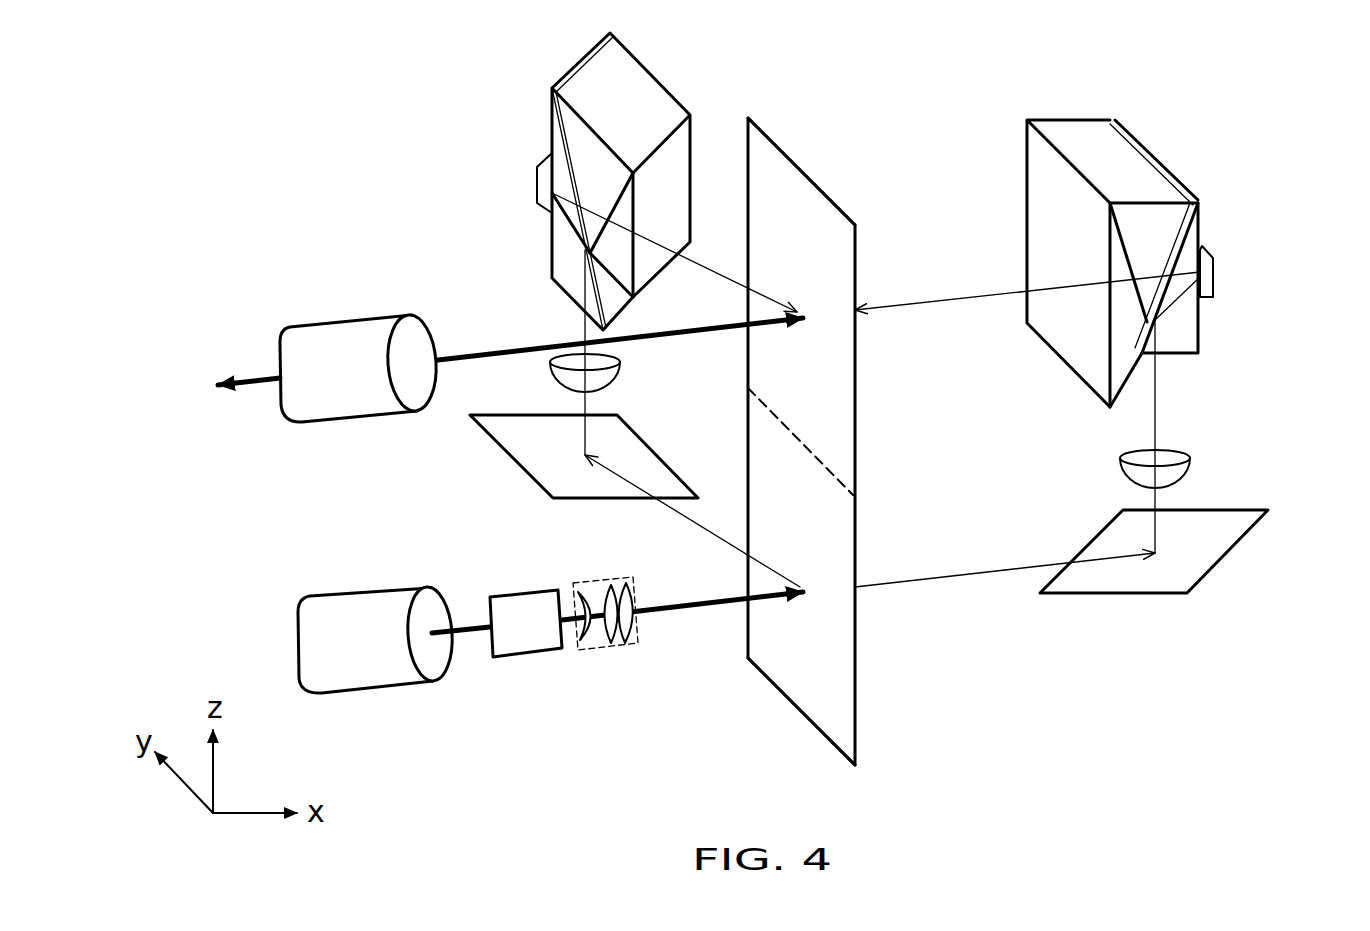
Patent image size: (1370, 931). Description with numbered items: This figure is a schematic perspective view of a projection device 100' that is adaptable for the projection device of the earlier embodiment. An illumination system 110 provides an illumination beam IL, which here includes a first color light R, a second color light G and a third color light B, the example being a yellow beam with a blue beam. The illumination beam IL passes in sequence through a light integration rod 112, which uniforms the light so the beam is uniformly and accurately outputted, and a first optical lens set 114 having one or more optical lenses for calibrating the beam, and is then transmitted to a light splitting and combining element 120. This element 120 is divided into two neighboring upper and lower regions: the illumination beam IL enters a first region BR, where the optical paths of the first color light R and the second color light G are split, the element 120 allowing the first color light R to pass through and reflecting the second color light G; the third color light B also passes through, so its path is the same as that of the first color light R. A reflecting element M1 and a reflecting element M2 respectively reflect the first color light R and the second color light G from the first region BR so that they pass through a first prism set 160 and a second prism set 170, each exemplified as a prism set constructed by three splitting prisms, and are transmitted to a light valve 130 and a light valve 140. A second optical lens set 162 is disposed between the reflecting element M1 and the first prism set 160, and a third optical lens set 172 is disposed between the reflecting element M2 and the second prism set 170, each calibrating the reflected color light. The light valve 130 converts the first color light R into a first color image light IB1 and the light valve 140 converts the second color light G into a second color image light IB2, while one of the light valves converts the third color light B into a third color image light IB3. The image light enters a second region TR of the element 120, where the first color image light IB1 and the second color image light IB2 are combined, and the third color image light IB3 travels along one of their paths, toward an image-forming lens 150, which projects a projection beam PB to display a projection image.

The projection device 100' is at (1342, 764).
The illumination system 110 is at (373, 613).
The light integration rod 112 is at (527, 645).
The first optical lens set 114 is at (610, 650).
The light splitting and combining element 120 is at (813, 695).
The light valve 130 is at (1213, 273).
The light valve 140 is at (537, 188).
The image-forming lens 150 is at (347, 338).
The first prism set 160 is at (1193, 148).
The second optical lens set 162 is at (1173, 473).
The second prism set 170 is at (557, 62).
The third optical lens set 172 is at (570, 380).
The second region TR is at (795, 218).
The first region BR is at (837, 667).
The reflecting element M1 is at (1213, 545).
The reflecting element M2 is at (533, 453).
The illumination beam IL is at (706, 606).
The second color light G is at (710, 541).
The first color light R is at (897, 582).
The third color light B is at (952, 577).
The projection beam PB is at (230, 386).
The first color image light IB1 is at (923, 307).
The second color image light IB2 is at (718, 275).
The third color image light IB3 is at (975, 298).